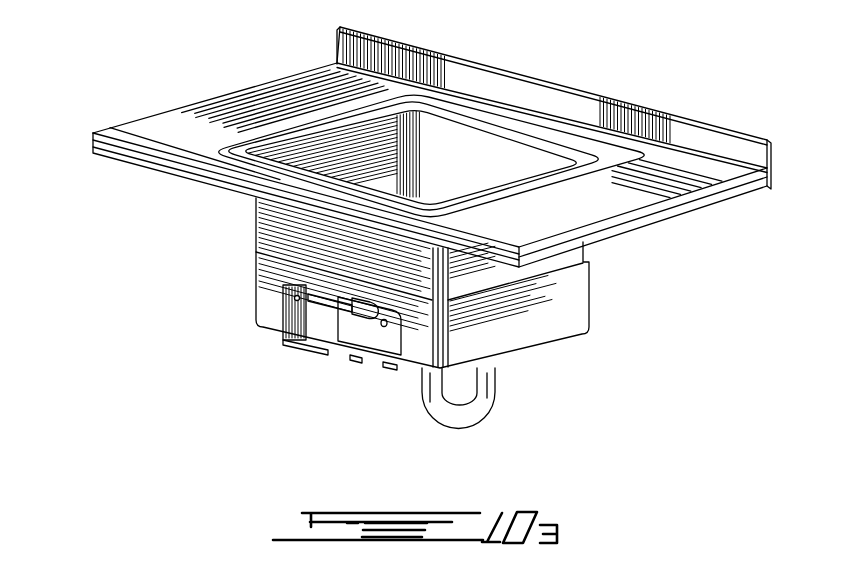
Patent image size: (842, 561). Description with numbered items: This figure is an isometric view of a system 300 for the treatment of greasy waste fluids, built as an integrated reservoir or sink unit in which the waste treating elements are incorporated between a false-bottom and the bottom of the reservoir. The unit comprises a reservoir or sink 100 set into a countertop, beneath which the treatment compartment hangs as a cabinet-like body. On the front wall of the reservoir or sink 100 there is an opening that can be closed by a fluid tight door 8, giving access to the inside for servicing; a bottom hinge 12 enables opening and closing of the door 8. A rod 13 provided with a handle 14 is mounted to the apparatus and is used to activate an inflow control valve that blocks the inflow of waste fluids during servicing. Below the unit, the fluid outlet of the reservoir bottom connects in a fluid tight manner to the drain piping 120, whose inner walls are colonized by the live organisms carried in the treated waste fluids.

The reservoir or sink 100 is at (477, 160).
The system for the treatment of greasy waste fluids 300 is at (192, 268).
The fluid tight door 8 is at (283, 338).
The handle 14 is at (320, 345).
The rod 13 is at (376, 303).
The bottom hinge 12 is at (358, 362).
The drain piping 120 is at (438, 410).